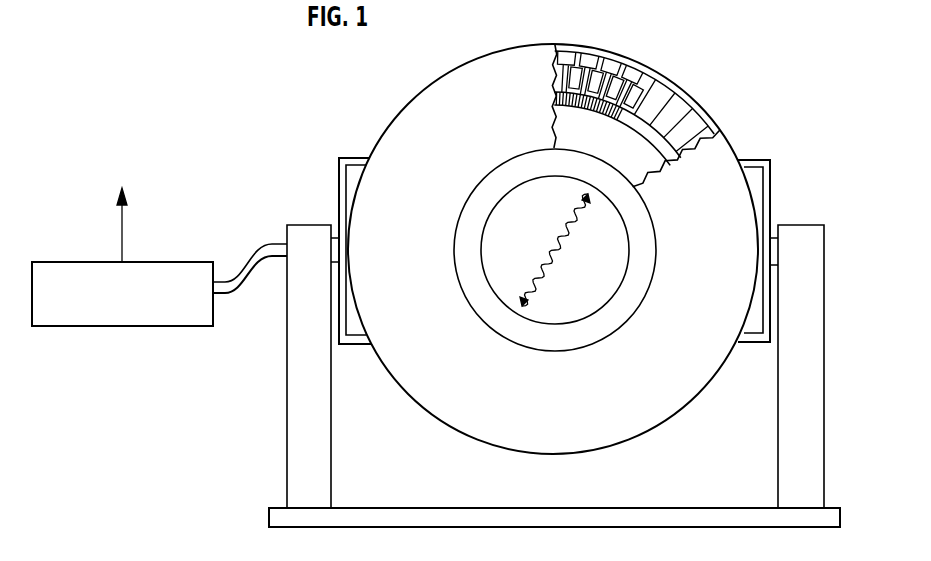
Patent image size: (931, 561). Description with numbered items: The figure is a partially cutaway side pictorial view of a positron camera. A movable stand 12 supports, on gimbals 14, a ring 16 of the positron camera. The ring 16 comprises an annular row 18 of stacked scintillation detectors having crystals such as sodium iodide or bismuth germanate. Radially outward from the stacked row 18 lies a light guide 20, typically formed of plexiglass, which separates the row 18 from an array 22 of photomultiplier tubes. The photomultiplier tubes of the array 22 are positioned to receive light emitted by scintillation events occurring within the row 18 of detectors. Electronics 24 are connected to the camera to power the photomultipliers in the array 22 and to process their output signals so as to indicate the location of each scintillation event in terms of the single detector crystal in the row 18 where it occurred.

The movable stand 12 is at (806, 358).
The gimbals 14 is at (771, 183).
The ring 16 is at (434, 93).
The annular row of stacked scintillation detectors 18 is at (602, 112).
The light guide 20 is at (562, 92).
The array of photomultiplier tubes 22 is at (573, 78).
The electronics 24 is at (158, 320).